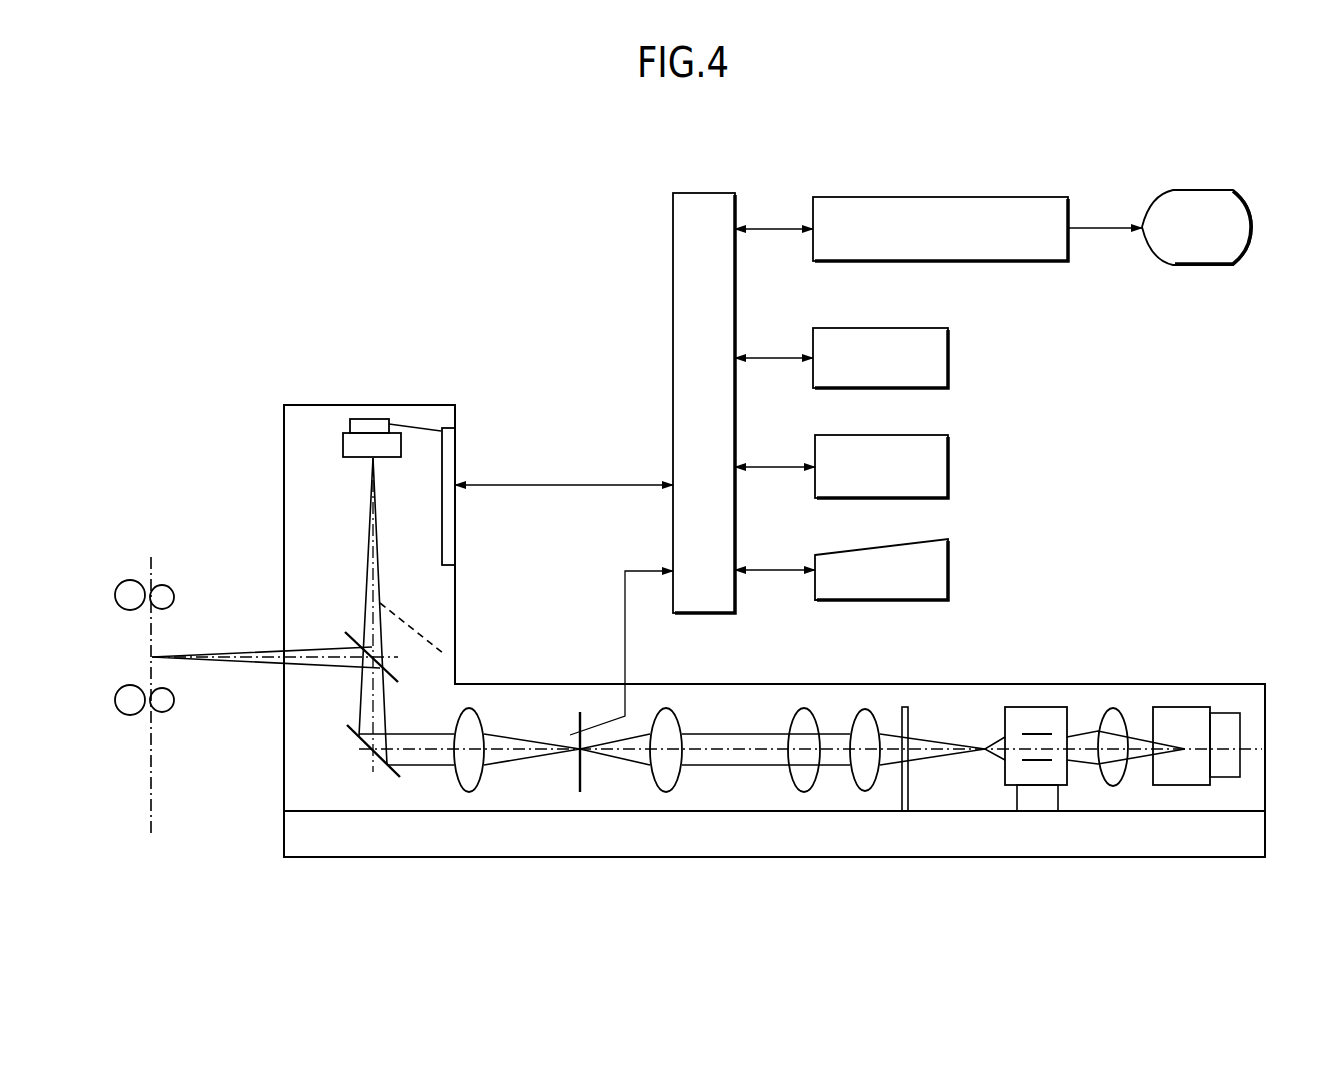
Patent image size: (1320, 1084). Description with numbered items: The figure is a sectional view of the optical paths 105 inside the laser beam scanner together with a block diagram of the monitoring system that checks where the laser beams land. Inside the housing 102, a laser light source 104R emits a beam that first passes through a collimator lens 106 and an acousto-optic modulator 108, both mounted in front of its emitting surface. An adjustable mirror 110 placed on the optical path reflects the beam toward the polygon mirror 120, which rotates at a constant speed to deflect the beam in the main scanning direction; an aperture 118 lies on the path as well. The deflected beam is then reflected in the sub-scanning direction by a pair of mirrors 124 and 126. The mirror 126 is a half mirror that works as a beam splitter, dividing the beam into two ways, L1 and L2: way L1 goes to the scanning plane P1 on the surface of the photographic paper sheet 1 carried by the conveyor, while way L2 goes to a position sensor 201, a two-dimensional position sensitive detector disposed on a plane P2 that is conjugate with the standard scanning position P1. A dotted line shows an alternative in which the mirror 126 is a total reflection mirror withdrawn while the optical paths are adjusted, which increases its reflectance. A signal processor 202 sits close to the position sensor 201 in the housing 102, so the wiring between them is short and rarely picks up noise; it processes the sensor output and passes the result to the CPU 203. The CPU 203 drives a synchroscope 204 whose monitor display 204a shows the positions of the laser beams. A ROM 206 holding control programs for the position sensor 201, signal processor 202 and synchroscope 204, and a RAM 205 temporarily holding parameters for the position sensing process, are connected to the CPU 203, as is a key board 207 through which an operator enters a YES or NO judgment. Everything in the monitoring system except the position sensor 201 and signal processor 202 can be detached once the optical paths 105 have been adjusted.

The photographic paper sheet 1 is at (152, 775).
The housing 102 is at (434, 838).
The laser light source 104R is at (1195, 707).
The optical paths 105 is at (279, 879).
The collimator lens 106 is at (1120, 707).
The acousto-optic modulator 108 is at (1030, 707).
The adjustable mirror 110 is at (905, 707).
The aperture / pinhole 118 is at (582, 713).
The polygon mirror 120 is at (480, 710).
The mirror 124 is at (360, 744).
The mirror 126 is at (350, 634).
The position sensor 201 is at (343, 441).
The signal processor 202 is at (457, 418).
The CPU 203 is at (700, 193).
The synchroscope 204 is at (890, 197).
The monitor display 204a is at (1208, 190).
The RAM 205 is at (950, 353).
The ROM 206 is at (950, 463).
The key board 207 is at (950, 570).
The scanning plane P1 is at (158, 655).
The plane P2 is at (361, 463).
The laser beam way L1 is at (224, 657).
The laser beam way L2 is at (367, 563).